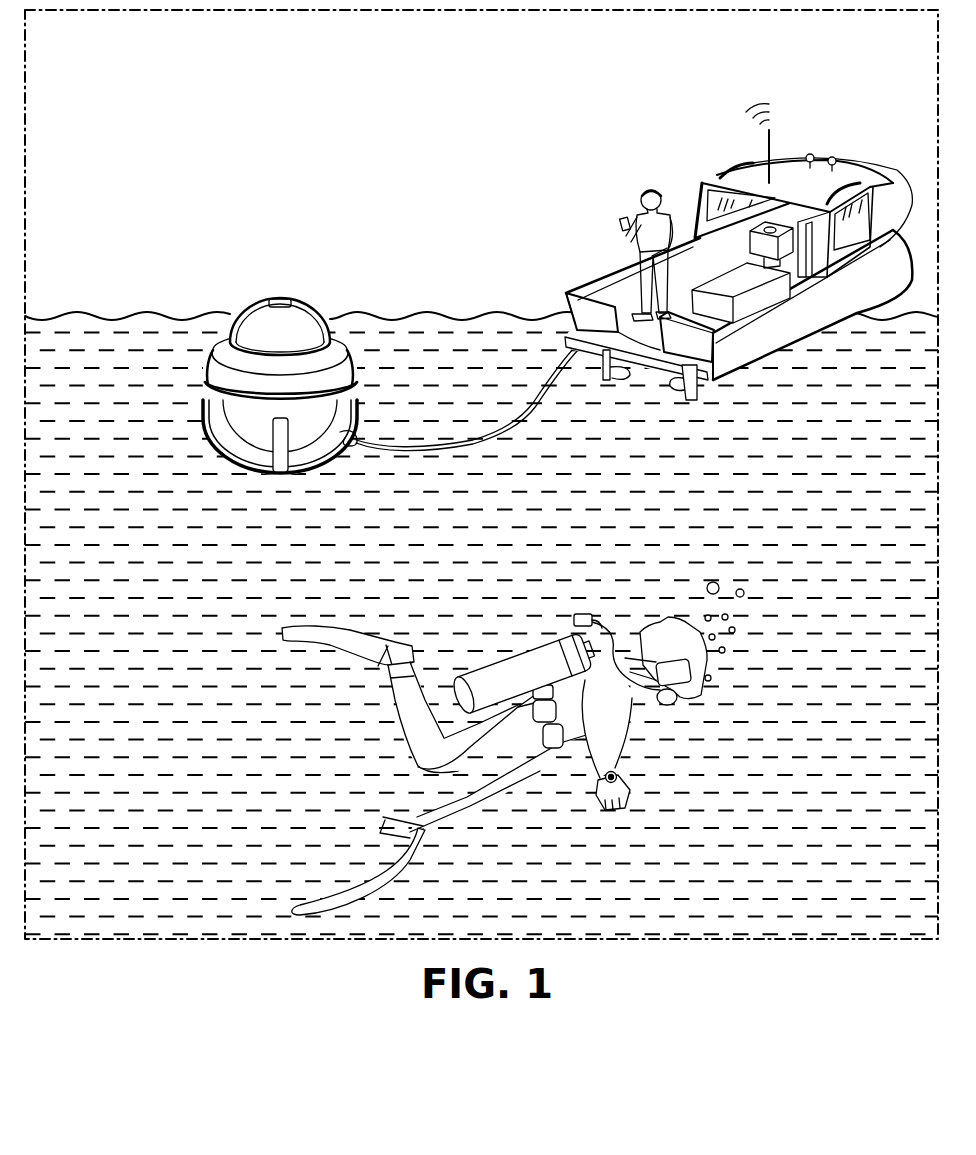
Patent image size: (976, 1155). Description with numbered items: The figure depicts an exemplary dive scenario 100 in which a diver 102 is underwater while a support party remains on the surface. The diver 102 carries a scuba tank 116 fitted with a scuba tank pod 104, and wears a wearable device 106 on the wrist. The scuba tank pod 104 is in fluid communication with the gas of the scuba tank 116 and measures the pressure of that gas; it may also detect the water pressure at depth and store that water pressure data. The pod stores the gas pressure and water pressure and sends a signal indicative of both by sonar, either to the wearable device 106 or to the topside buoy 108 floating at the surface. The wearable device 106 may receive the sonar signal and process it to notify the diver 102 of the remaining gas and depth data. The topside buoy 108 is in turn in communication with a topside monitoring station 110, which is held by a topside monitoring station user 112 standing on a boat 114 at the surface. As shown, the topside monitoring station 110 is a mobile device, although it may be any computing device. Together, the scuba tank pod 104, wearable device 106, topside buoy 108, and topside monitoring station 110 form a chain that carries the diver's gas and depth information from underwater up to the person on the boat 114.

The dive scenario 100 is at (194, 84).
The diver 102 is at (457, 590).
The scuba tank pod 104 is at (583, 614).
The wearable device 106 is at (618, 780).
The topside buoy 108 is at (240, 280).
The topside monitoring station 110 is at (620, 198).
The topside monitoring station user 112 is at (628, 160).
The boat 114 is at (818, 125).
The scuba tank 116 is at (505, 653).